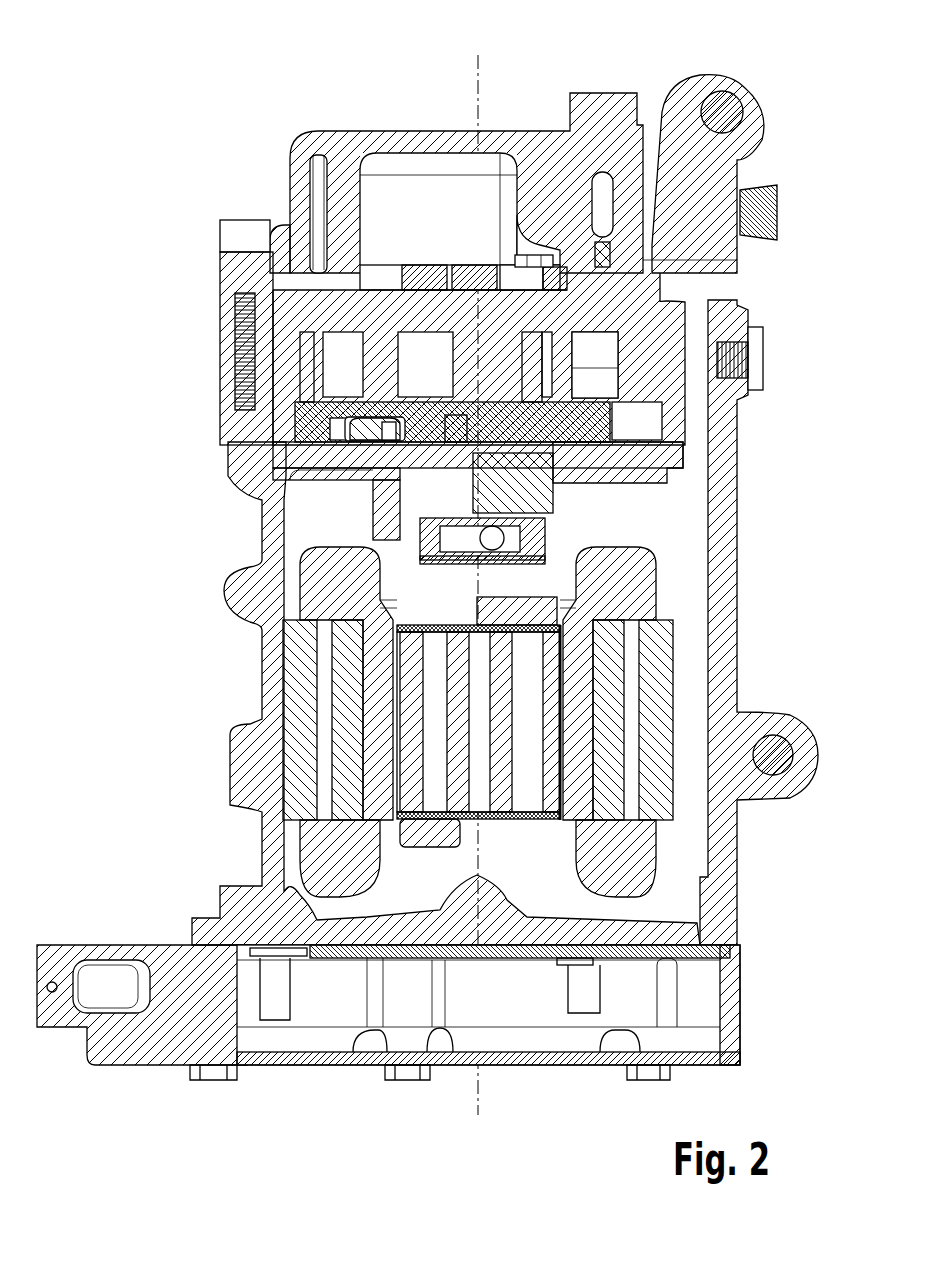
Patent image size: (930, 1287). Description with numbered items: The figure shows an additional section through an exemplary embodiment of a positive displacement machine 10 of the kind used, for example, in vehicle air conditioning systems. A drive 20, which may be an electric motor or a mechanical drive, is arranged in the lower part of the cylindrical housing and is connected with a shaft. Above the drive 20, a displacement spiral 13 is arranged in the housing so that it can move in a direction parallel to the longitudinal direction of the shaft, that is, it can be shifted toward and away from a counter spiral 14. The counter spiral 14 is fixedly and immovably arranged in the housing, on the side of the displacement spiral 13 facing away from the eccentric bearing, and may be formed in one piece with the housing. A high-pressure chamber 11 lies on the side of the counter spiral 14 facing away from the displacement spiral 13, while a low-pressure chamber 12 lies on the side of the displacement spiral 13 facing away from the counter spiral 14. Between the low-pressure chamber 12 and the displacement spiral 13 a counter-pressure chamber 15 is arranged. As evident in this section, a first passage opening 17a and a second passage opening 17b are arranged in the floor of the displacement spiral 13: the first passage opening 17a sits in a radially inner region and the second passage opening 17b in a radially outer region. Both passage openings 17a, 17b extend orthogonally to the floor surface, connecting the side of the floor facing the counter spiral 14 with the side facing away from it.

The positive displacement machine 10 is at (72, 80).
The high-pressure chamber 11 is at (405, 165).
The low-pressure chamber 12 is at (685, 513).
The displacement spiral 13 is at (572, 368).
The counter spiral 14 is at (672, 342).
The counter-pressure chamber 15 is at (420, 497).
The first passage opening 17a is at (413, 415).
The second passage opening 17b is at (332, 433).
The drive 20 is at (660, 680).